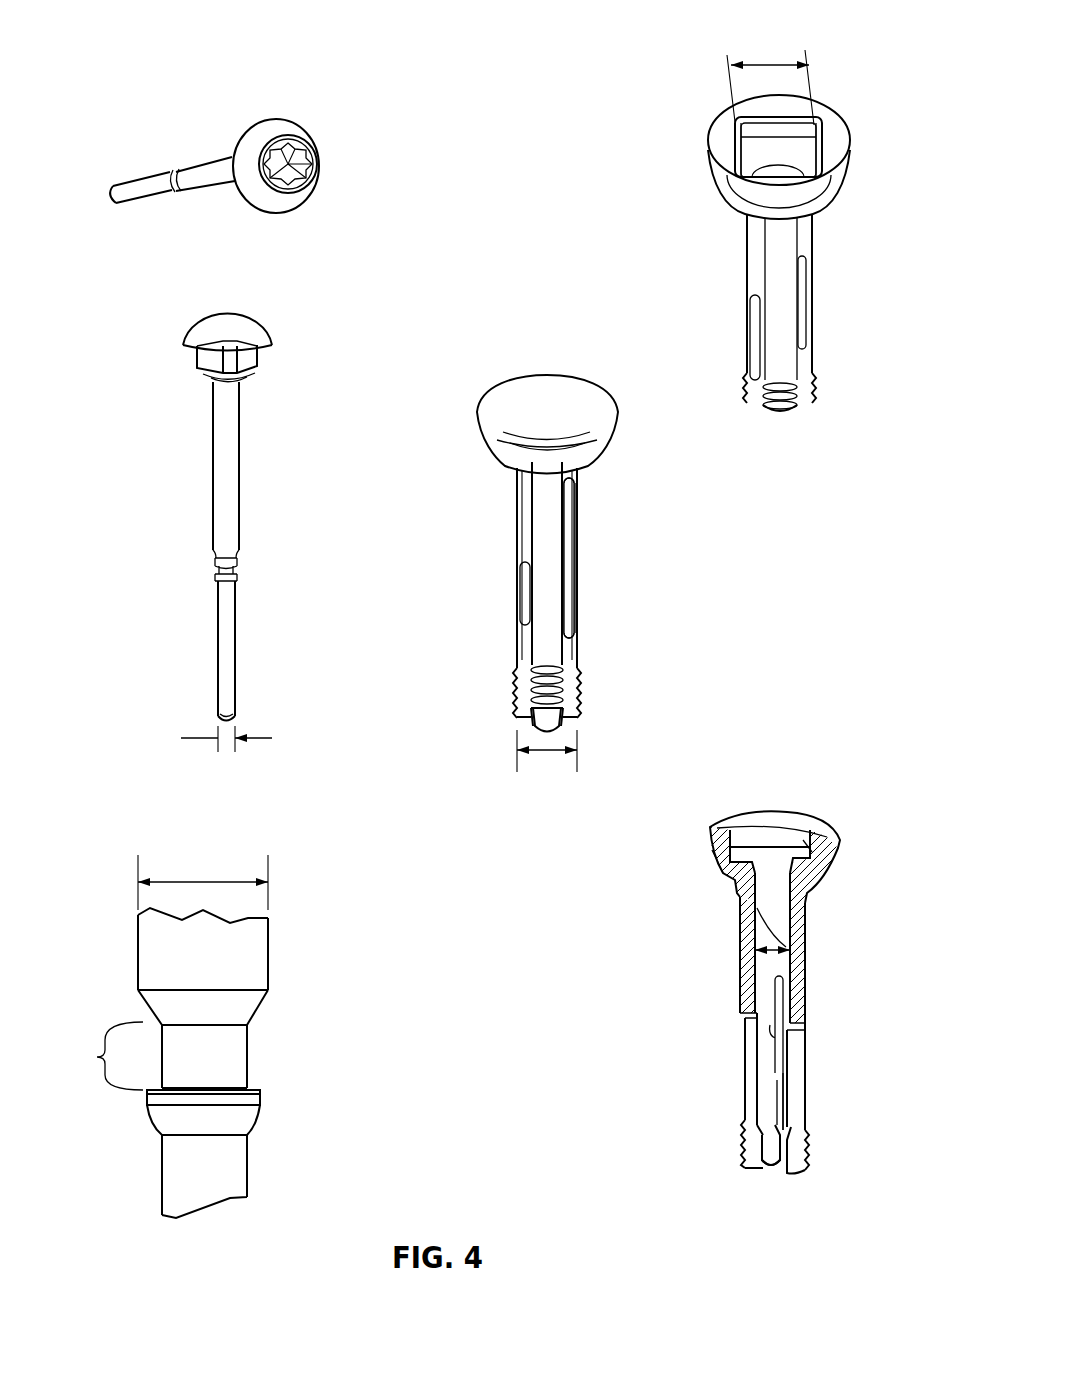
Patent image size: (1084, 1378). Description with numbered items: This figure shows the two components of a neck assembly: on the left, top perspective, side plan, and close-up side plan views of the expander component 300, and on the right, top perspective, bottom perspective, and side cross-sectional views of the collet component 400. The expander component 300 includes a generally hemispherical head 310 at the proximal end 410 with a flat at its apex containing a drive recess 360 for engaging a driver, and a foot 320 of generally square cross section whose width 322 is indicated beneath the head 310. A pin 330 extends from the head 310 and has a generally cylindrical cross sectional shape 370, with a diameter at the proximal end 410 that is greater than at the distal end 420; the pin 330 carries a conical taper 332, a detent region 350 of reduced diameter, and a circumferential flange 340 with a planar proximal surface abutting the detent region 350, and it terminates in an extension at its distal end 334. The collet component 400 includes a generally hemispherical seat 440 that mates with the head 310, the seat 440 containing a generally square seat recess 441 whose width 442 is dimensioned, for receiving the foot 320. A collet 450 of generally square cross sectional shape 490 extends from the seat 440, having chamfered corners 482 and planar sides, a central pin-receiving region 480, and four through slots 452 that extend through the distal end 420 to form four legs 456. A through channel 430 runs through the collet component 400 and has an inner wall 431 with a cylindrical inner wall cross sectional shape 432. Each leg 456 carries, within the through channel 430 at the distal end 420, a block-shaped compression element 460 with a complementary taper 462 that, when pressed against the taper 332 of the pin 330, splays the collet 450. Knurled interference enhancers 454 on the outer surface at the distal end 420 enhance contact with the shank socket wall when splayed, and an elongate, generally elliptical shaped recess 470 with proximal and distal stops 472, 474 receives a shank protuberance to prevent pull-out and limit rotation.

The expander component 300 is at (190, 137).
The head 310 is at (262, 320).
The foot 320 is at (257, 366).
The hex drive width 322 is at (196, 393).
The pin 330 is at (241, 480).
The taper 332 is at (262, 1000).
The distal end 334 is at (219, 650).
The circumferential flange 340 is at (262, 1097).
The detent region 350 is at (100, 1057).
The drive recess 360 is at (283, 164).
The cross sectional shape 370 is at (225, 742).
The collet component 400 is at (858, 783).
The proximal end 410 is at (480, 432).
The distal end 420 is at (518, 717).
The through channel 430 is at (773, 173).
The inner wall 431 is at (752, 947).
The inner wall cross sectional shape 432 is at (793, 927).
The seat 440 is at (842, 175).
The seat recess 441 is at (783, 128).
The socket width 442 is at (768, 65).
The collet 450 is at (747, 323).
The through slot 452 is at (518, 623).
The interference enhancers 454 is at (577, 693).
The leg 456 is at (803, 402).
The compression element 460 is at (768, 1162).
The complementary taper 462 is at (760, 1127).
The shaped recess 470 is at (568, 512).
The proximal stop 472 is at (577, 483).
The distal stop 474 is at (577, 620).
The inner pin 480 is at (543, 512).
The chamfered corners 482 is at (525, 476).
The cross sectional shape 490 is at (547, 753).